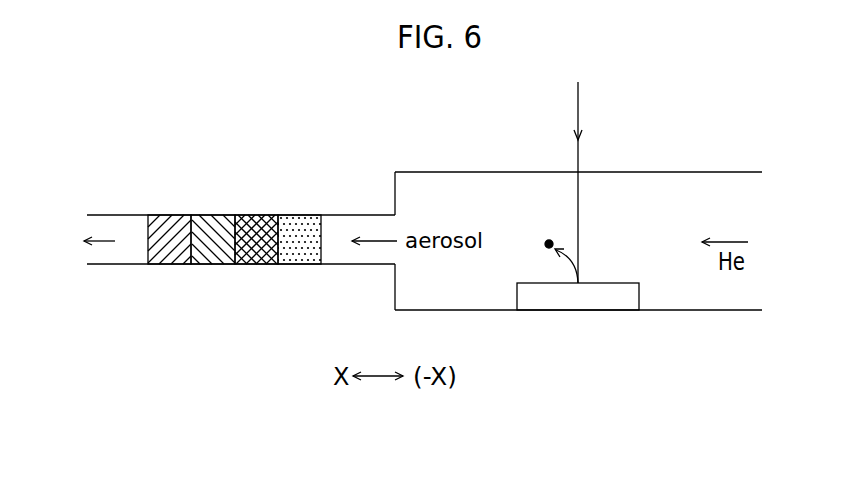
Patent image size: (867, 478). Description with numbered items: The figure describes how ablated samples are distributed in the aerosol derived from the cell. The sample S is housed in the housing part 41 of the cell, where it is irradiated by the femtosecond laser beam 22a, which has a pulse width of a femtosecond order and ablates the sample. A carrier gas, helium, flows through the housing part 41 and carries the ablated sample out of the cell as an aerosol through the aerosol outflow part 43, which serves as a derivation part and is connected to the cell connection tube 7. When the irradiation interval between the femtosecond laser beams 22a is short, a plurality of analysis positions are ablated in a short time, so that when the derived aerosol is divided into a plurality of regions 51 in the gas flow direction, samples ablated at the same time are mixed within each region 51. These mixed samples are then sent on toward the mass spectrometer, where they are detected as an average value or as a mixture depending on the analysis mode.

The cell connection tube 7 is at (122, 268).
The region 51 is at (287, 220).
The aerosol outflow part 43 is at (357, 268).
The housing part 41 is at (703, 178).
The femtosecond laser beam 22a is at (582, 157).
The sample S is at (603, 300).